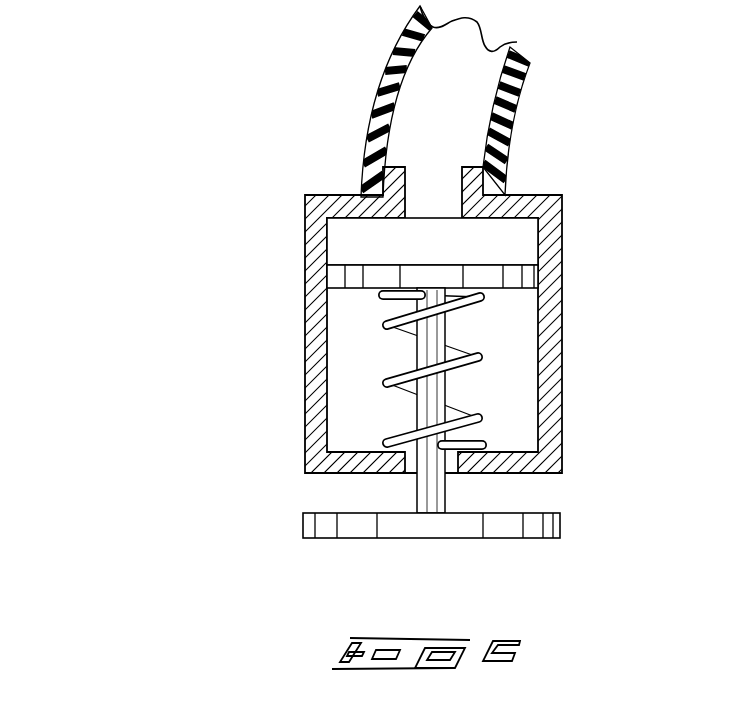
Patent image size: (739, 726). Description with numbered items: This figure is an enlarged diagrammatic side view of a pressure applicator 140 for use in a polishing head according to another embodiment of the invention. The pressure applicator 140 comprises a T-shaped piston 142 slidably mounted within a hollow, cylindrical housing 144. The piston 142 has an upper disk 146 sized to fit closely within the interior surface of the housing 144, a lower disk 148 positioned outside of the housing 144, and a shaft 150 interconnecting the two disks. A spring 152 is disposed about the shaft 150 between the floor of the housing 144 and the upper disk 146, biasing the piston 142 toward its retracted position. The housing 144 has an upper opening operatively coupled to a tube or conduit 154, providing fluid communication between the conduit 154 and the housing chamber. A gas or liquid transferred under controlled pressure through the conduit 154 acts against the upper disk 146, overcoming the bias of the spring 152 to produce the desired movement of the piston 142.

The pressure applicator 140 is at (210, 173).
The piston 142 is at (426, 554).
The housing 144 is at (547, 230).
The upper disk 146 is at (352, 277).
The lower disk 148 is at (503, 528).
The shaft 150 is at (430, 345).
The spring 152 is at (427, 400).
The conduit 154 is at (500, 133).